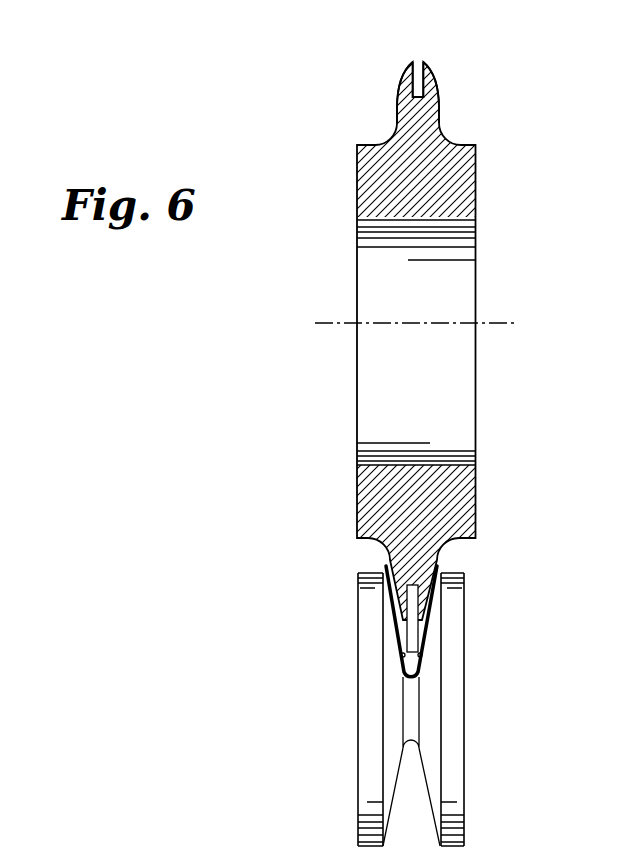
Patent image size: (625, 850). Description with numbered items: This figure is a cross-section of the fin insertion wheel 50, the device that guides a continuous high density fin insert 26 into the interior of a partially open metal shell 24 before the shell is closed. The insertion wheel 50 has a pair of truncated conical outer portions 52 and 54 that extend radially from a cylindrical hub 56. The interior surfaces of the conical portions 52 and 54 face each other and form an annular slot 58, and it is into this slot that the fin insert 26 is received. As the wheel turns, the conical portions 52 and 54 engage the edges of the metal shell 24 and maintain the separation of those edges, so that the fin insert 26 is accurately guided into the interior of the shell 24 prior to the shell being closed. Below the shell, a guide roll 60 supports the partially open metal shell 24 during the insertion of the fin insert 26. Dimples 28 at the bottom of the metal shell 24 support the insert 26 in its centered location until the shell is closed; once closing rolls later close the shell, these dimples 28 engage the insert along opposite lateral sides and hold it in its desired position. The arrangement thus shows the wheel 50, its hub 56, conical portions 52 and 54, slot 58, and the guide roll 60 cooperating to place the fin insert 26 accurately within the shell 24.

The insertion wheel 50 is at (337, 360).
The truncated conical outer portion 52 is at (397, 102).
The truncated conical outer portion 54 is at (439, 102).
The cylindrical hub 56 is at (357, 195).
The annular slot 58 is at (418, 58).
The guide roll 60 is at (358, 695).
The metal shell 24 is at (419, 674).
The fin insert 26 is at (419, 627).
The dimples 28 is at (403, 652).